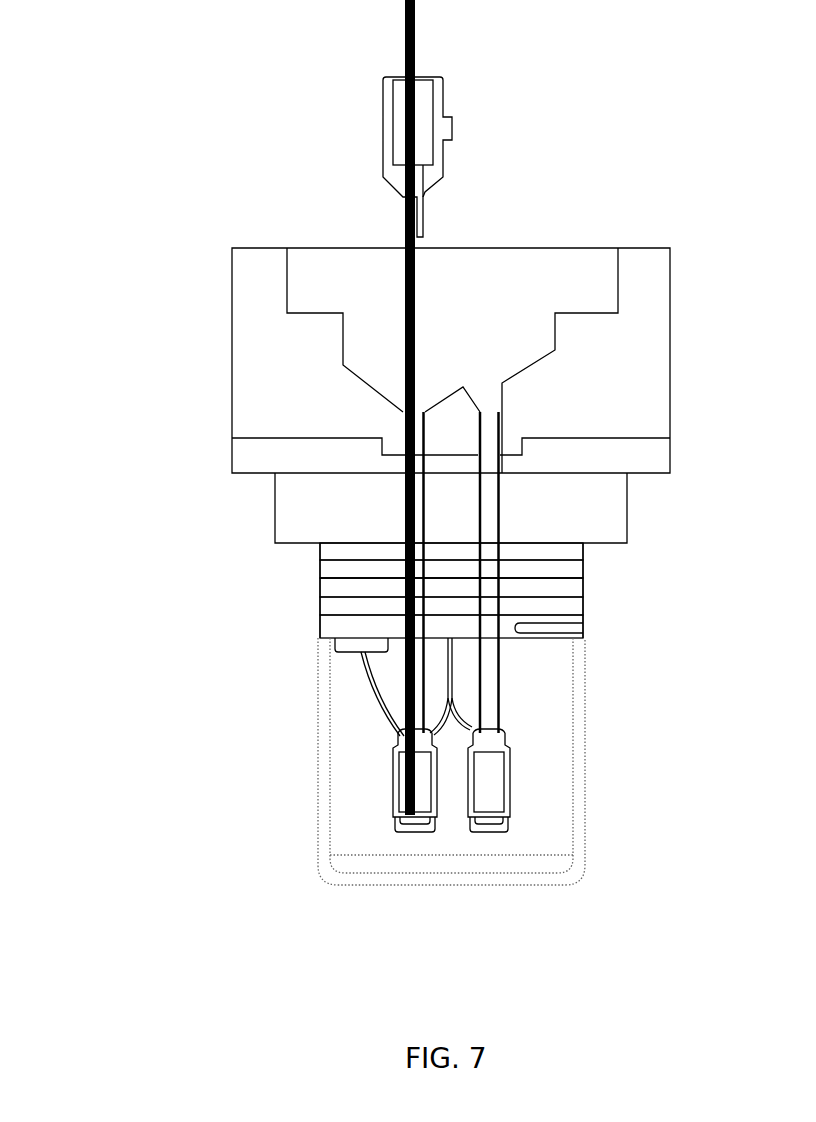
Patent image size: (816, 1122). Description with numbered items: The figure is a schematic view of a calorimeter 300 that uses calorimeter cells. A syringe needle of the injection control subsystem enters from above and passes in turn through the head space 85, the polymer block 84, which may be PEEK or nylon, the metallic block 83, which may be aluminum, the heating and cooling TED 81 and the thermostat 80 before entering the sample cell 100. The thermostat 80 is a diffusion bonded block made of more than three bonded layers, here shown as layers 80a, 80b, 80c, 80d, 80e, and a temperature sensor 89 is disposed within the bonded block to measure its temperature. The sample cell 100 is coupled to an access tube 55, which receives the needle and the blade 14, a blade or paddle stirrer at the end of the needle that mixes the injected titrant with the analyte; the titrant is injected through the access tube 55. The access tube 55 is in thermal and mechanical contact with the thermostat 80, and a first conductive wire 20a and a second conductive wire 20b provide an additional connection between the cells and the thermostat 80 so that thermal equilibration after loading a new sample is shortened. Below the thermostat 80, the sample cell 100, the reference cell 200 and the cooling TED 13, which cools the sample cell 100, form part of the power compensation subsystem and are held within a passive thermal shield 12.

The calorimeter 300 is at (168, 172).
The head space 85 is at (585, 247).
The polymer block 84 is at (630, 407).
The metallic block 83 is at (655, 457).
The heating and cooling TED 81 is at (275, 505).
The thermostat 80 is at (471, 604).
The diffusion bonded layer 80a is at (583, 553).
The diffusion bonded layer 80b is at (583, 573).
The diffusion bonded layer 80c is at (583, 593).
The diffusion bonded layer 80d is at (583, 613).
The diffusion bonded layer 80e is at (575, 640).
The temperature sensor 89 is at (583, 628).
The access tube 55 is at (387, 578).
The cooling TED 13 is at (357, 645).
The first conductive wire 20a is at (402, 718).
The second conductive wire 20b is at (462, 708).
The sample cell 100 is at (339, 780).
The blade 14 is at (393, 800).
The reference cell 200 is at (512, 768).
The passive thermal shield 12 is at (323, 855).